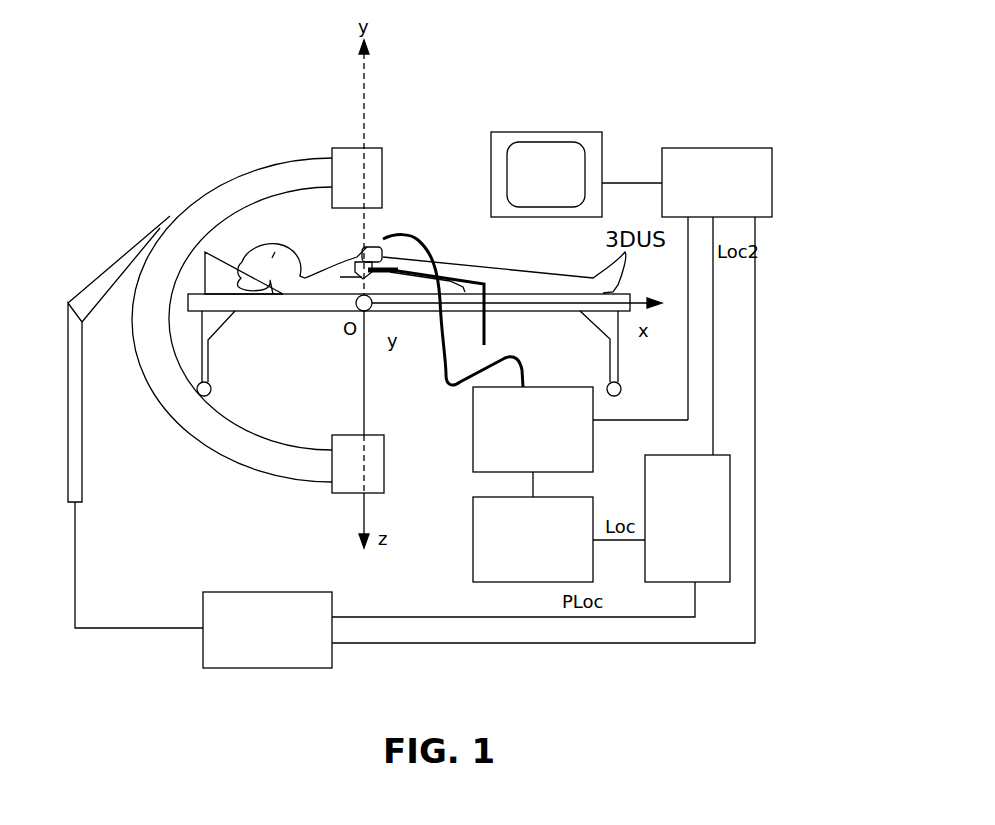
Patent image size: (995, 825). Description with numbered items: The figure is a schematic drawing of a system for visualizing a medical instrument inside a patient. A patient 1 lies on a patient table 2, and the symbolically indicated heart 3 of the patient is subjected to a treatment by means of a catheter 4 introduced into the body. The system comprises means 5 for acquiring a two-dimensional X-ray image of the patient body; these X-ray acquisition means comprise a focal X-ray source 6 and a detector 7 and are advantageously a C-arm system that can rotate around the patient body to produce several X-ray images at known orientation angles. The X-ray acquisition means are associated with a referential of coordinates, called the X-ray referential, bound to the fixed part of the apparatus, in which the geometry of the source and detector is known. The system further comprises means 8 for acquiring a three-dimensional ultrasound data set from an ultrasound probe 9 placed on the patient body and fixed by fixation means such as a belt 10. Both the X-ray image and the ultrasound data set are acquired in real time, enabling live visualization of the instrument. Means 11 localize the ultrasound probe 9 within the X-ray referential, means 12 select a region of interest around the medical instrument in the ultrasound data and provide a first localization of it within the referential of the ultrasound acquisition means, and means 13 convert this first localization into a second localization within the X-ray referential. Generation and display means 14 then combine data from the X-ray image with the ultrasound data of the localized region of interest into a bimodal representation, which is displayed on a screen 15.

The patient 1 is at (270, 250).
The patient table 2 is at (283, 302).
The heart 3 is at (360, 251).
The catheter 4 is at (374, 264).
The means for acquiring a 2D X-ray image 5 is at (212, 186).
The focal X-ray source 6 is at (352, 148).
The detector 7 is at (384, 468).
The means for acquiring a 3D ultrasound data set 8 is at (473, 412).
The ultrasound probe 9 is at (366, 246).
The belt 10 is at (383, 258).
The means for localizing the ultrasound probe 11 is at (298, 592).
The means for selecting a region of interest 12 is at (473, 520).
The means for converting the first localization 13 is at (728, 455).
The generation and display means 14 is at (682, 148).
The screen 15 is at (491, 160).